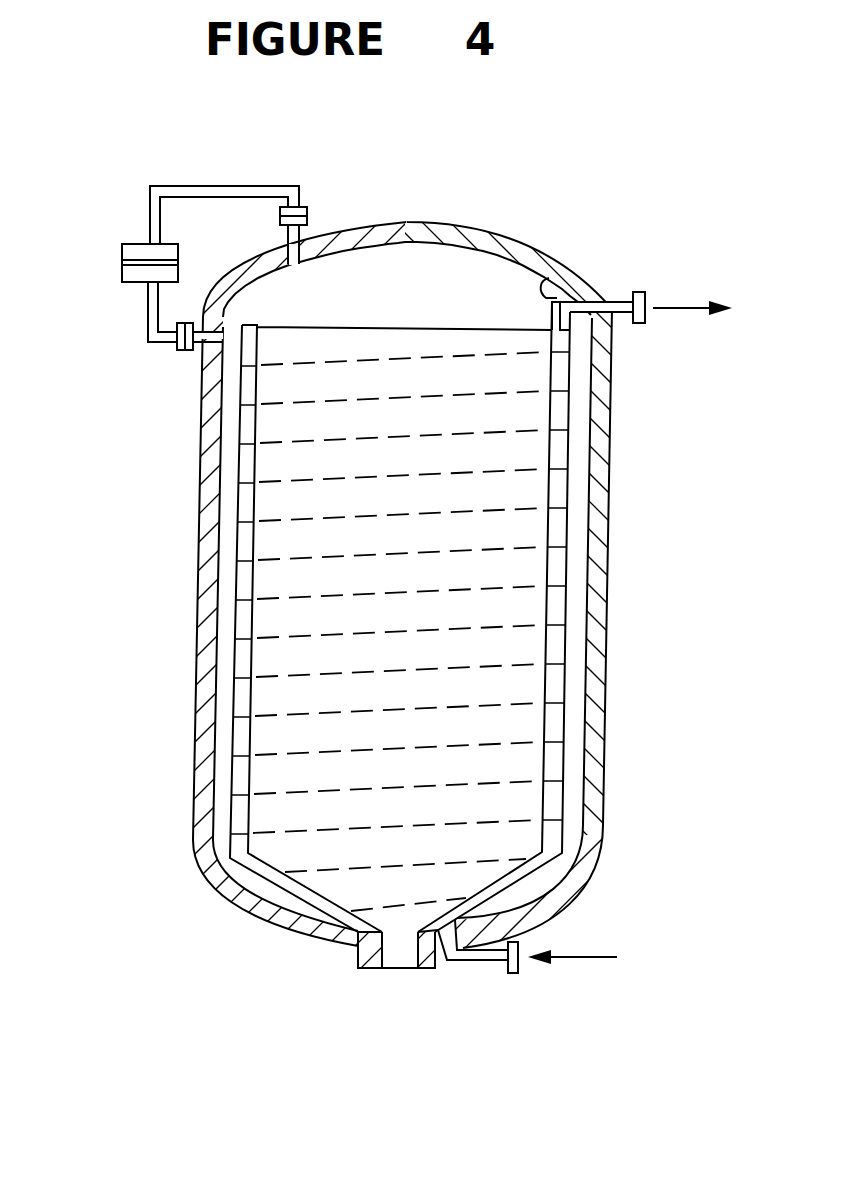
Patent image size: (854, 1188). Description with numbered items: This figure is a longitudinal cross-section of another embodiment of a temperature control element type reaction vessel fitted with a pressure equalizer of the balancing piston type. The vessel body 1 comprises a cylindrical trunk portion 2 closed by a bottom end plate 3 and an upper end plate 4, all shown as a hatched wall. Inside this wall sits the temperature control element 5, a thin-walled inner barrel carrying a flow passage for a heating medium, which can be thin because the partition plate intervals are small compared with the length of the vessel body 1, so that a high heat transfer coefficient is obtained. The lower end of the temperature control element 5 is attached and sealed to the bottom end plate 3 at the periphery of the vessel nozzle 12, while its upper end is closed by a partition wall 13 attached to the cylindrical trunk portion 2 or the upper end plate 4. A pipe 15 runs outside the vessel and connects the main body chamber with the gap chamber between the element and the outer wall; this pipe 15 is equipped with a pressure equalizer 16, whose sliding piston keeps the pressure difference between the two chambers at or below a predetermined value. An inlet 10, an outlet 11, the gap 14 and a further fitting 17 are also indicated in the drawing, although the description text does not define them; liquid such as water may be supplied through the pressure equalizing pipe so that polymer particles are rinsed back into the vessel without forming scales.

The vessel body 1 is at (636, 475).
The cylindrical trunk portion 2 is at (605, 613).
The bottom end plate 3 is at (267, 926).
The upper end plate 4 is at (503, 238).
The temperature control element 5 is at (572, 405).
The inlet pipe 10 is at (520, 966).
The outlet pipe 11 is at (647, 298).
The vessel nozzle 12 is at (430, 968).
The partition wall 13 is at (545, 283).
The annular space 14 is at (228, 540).
The pipe 15 is at (233, 186).
The pressure equalizer 16 is at (128, 283).
The valve 17 is at (138, 243).